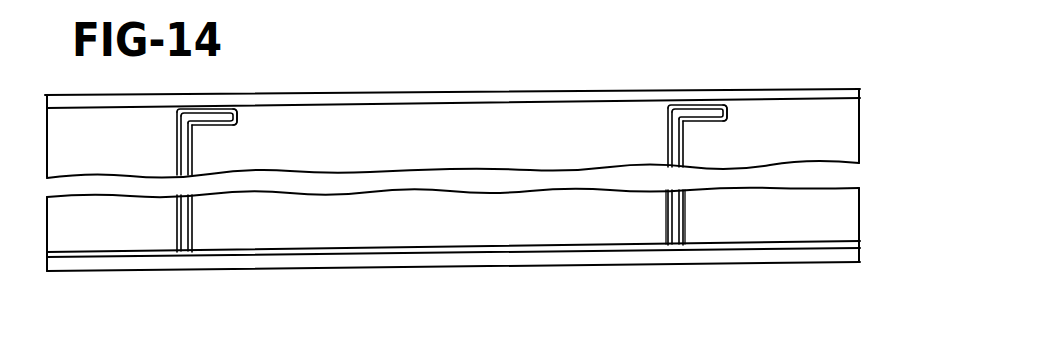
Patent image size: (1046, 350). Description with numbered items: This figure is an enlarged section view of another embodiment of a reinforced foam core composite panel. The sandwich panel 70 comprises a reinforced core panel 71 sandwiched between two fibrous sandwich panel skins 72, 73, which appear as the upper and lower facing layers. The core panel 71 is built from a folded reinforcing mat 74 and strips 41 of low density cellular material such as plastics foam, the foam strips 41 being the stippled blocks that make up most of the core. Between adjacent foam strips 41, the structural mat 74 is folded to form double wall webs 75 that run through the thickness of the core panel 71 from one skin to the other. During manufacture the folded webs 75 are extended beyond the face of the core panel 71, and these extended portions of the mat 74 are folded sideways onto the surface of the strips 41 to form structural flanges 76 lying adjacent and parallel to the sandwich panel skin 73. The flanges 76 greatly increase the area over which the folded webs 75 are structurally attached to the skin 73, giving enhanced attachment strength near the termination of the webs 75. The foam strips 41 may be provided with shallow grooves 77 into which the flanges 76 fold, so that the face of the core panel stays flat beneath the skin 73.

The sandwich panel 70 is at (455, 82).
The reinforced core panel 71 is at (838, 199).
The fibrous sandwich panel skin 72 is at (433, 264).
The fibrous sandwich panel skin 73 is at (557, 91).
The folded reinforcing mat 74 is at (269, 258).
The folded web 75 is at (178, 229).
The structural flange 76 is at (207, 110).
The shallow groove 77 is at (243, 113).
The strip of low density cellular material 41 is at (707, 227).